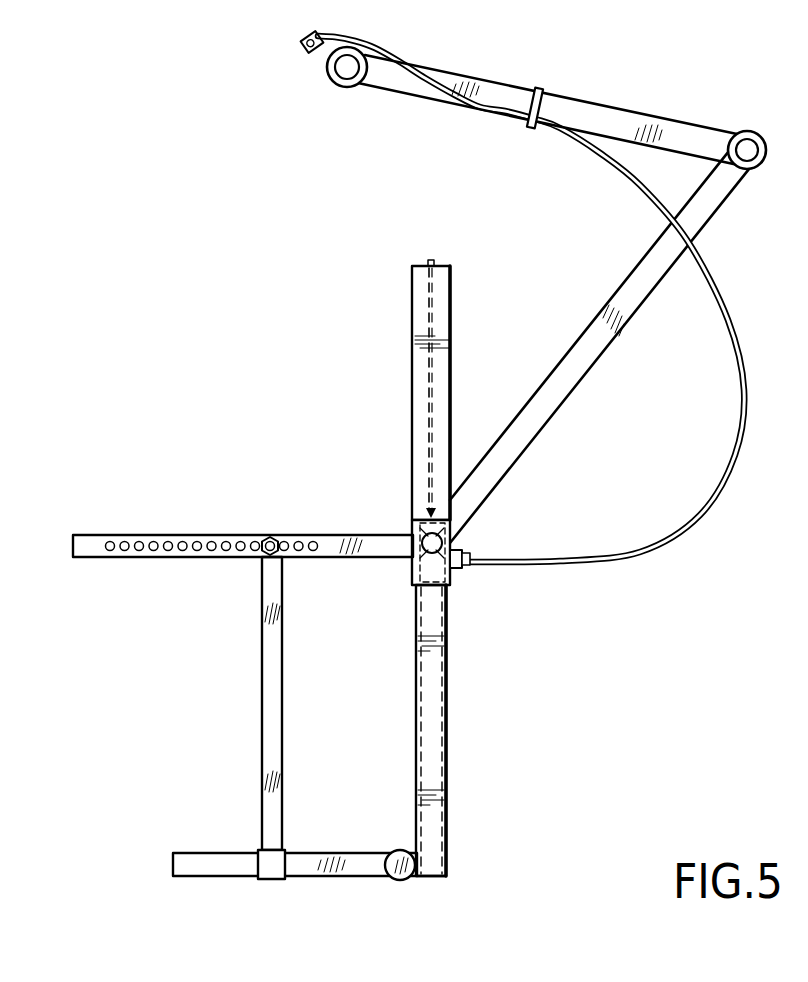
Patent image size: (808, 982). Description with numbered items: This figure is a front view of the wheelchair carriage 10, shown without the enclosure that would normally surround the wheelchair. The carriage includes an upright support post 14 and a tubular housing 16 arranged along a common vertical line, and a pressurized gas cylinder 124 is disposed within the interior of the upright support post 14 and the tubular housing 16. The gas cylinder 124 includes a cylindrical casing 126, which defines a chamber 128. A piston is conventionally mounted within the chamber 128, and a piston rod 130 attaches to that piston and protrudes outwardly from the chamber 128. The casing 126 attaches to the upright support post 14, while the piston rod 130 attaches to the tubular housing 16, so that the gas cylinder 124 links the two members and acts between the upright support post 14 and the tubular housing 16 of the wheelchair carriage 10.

The wheelchair carriage 10 is at (188, 250).
The tubular housing 16 is at (453, 287).
The piston rod 130 is at (432, 410).
The upright support post 14 is at (445, 690).
The pressurized gas cylinder 124 is at (435, 630).
The cylindrical casing 126 is at (445, 752).
The chamber 128 is at (432, 822).